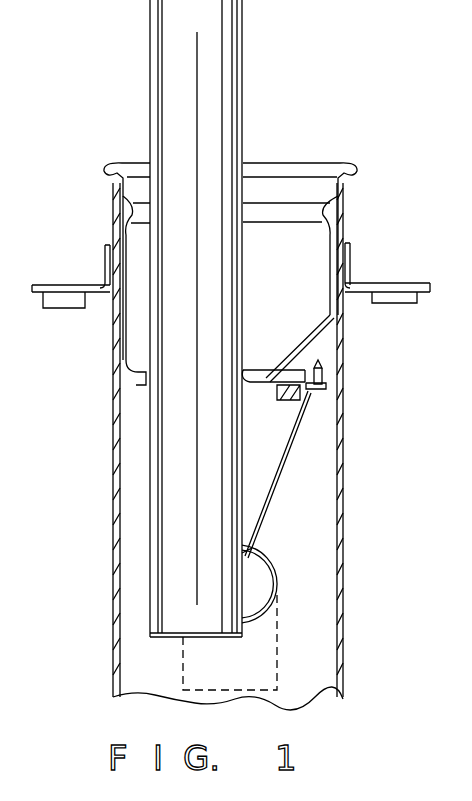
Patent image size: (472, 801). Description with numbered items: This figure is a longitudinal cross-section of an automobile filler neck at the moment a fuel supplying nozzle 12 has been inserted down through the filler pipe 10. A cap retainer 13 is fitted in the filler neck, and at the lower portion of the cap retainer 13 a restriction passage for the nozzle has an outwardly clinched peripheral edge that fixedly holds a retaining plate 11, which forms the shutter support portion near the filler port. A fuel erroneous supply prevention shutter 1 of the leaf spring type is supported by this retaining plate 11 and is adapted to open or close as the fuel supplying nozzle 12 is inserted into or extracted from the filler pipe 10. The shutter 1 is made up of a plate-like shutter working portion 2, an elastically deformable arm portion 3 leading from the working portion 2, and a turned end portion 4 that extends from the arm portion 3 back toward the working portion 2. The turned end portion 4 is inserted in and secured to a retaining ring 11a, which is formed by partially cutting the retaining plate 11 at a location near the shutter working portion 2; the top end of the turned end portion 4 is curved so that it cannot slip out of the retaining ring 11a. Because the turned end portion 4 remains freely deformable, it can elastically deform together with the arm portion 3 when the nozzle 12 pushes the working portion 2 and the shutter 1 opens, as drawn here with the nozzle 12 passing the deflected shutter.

The fuel erroneous supply prevention shutter 1 is at (313, 477).
The shutter working portion 2 is at (267, 518).
The arm portion 3 is at (312, 389).
The turned end portion 4 is at (322, 377).
The filler pipe 10 is at (343, 627).
The retaining plate 11 is at (270, 370).
The retaining ring 11a is at (292, 405).
The fuel supplying nozzle 12 is at (158, 600).
The cap retainer 13 is at (290, 162).